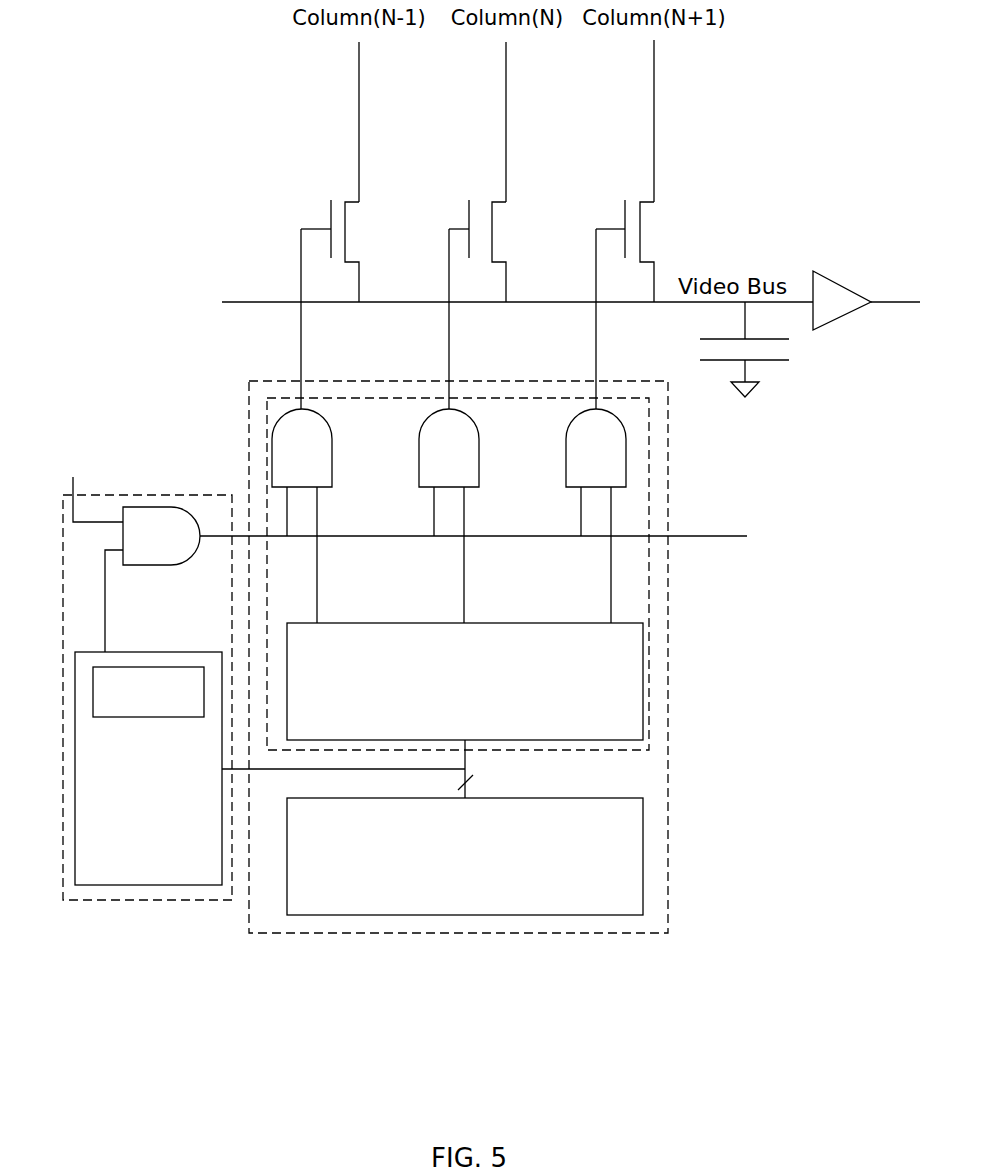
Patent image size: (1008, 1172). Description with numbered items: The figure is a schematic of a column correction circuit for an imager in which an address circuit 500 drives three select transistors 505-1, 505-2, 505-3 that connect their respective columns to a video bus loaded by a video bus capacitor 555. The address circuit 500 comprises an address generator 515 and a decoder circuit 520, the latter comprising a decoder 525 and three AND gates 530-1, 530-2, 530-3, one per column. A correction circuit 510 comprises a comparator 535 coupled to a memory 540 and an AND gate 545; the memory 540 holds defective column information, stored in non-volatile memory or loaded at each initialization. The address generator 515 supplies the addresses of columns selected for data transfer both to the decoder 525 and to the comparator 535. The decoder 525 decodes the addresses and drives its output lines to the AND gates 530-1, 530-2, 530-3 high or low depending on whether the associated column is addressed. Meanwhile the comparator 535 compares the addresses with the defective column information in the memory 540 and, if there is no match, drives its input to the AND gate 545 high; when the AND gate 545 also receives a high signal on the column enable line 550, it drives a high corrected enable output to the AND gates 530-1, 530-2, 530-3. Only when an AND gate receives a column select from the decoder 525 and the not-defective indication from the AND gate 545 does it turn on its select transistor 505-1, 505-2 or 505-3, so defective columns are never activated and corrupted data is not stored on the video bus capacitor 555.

The address circuit 500 is at (492, 935).
The select transistor 505-1 is at (330, 208).
The select transistor 505-2 is at (469, 208).
The select transistor 505-3 is at (625, 208).
The correction circuit 510 is at (75, 900).
The address generator 515 is at (645, 828).
The decoder circuit 520 is at (650, 650).
The decoder 525 is at (349, 622).
The AND gate 530-1 is at (327, 419).
The AND gate 530-2 is at (475, 419).
The AND gate 530-3 is at (619, 421).
The comparator 535 is at (165, 885).
The memory 540 is at (147, 718).
The AND gate 545 is at (163, 507).
The column enable line 550 is at (72, 502).
The video bus capacitor 555 is at (777, 362).